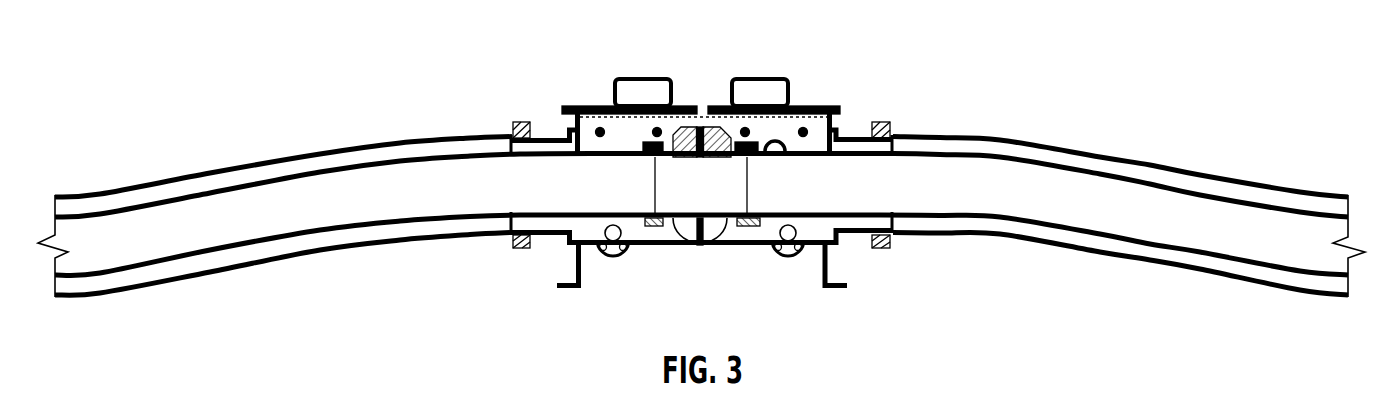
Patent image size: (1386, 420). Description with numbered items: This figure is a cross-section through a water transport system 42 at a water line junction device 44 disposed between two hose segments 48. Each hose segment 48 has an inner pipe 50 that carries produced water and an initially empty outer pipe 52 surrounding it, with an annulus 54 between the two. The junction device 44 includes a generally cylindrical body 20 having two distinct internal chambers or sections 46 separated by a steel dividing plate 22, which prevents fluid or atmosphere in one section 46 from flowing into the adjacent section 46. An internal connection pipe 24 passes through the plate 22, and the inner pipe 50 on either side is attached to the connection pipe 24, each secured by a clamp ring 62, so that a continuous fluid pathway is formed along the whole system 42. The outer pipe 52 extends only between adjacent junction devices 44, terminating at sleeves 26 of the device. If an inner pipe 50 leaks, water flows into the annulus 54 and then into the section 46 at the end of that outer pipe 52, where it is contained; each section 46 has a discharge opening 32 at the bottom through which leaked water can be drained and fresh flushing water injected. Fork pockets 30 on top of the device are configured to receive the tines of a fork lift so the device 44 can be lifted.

The cylindrical body 20 is at (633, 206).
The dividing plate 22 is at (687, 220).
The internal connection pipe 24 is at (713, 197).
The sleeve 26 is at (855, 135).
The fork pocket 30 is at (642, 77).
The discharge opening 32 is at (620, 245).
The water transport system 42 is at (840, 44).
The water line junction device 44 is at (683, 98).
The section 46 is at (582, 224).
The hose segment 48 is at (695, 140).
The inner pipe 50 is at (155, 217).
The outer pipe 52 is at (77, 195).
The annulus 54 is at (349, 235).
The clamp ring 62 is at (522, 121).